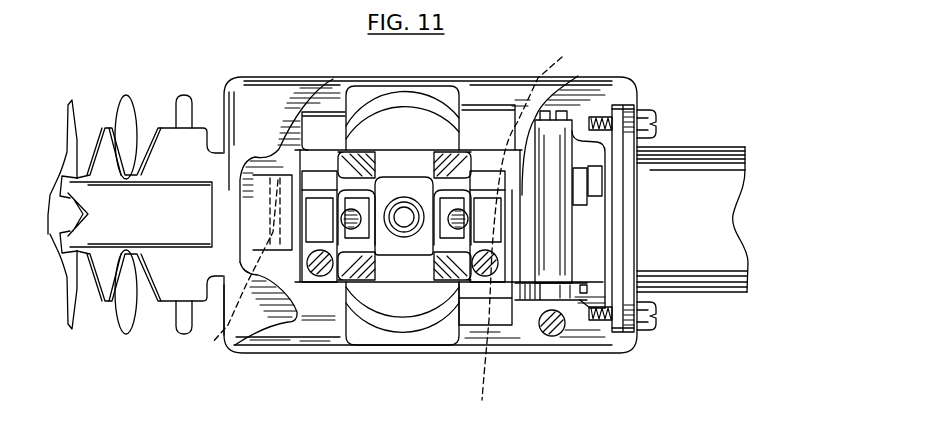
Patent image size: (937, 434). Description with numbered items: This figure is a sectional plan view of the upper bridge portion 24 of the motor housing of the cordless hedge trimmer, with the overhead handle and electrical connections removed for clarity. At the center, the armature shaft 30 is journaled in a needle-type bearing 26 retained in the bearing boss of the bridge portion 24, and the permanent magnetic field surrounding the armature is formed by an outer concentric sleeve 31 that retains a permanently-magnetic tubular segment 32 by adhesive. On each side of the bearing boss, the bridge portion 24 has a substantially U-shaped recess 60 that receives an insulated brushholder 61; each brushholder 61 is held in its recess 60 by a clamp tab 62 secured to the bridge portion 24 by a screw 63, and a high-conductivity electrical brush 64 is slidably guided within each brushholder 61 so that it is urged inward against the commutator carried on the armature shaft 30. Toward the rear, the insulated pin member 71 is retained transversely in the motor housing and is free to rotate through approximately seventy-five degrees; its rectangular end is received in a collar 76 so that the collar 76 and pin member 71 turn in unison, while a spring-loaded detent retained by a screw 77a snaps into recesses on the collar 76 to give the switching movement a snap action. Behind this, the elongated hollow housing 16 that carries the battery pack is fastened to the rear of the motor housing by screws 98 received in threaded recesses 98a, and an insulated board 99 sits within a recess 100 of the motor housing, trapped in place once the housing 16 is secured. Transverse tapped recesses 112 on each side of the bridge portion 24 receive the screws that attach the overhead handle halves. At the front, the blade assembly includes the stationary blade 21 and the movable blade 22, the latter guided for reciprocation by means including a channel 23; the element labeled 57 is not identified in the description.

The elongated substantially-hollow housing 16 is at (717, 170).
The stationary blade 21 is at (128, 118).
The movable blade 22 is at (90, 125).
The channel 23 is at (64, 187).
The lip 57 is at (93, 234).
The upper bridge portion 24 is at (381, 160).
The bearing 26 is at (502, 190).
The armature shaft 30 is at (406, 214).
The outer concentric sleeve 31 is at (398, 110).
The permanently-magnetic tubular segment 32 is at (413, 130).
The U-shaped recess 60 is at (294, 178).
The insulated brushholder 61 is at (287, 253).
The clamp tab 62 is at (303, 220).
The screw 63 is at (320, 278).
The electrical brush 64 is at (342, 242).
The insulated pin member 71 is at (547, 281).
The collar 76 is at (565, 330).
The screw 77a is at (556, 336).
The screw 98 is at (650, 118).
The threaded recess 98a is at (604, 110).
The insulated board 99 is at (617, 148).
The recess 100 is at (625, 111).
The tapped recess 112 is at (381, 227).